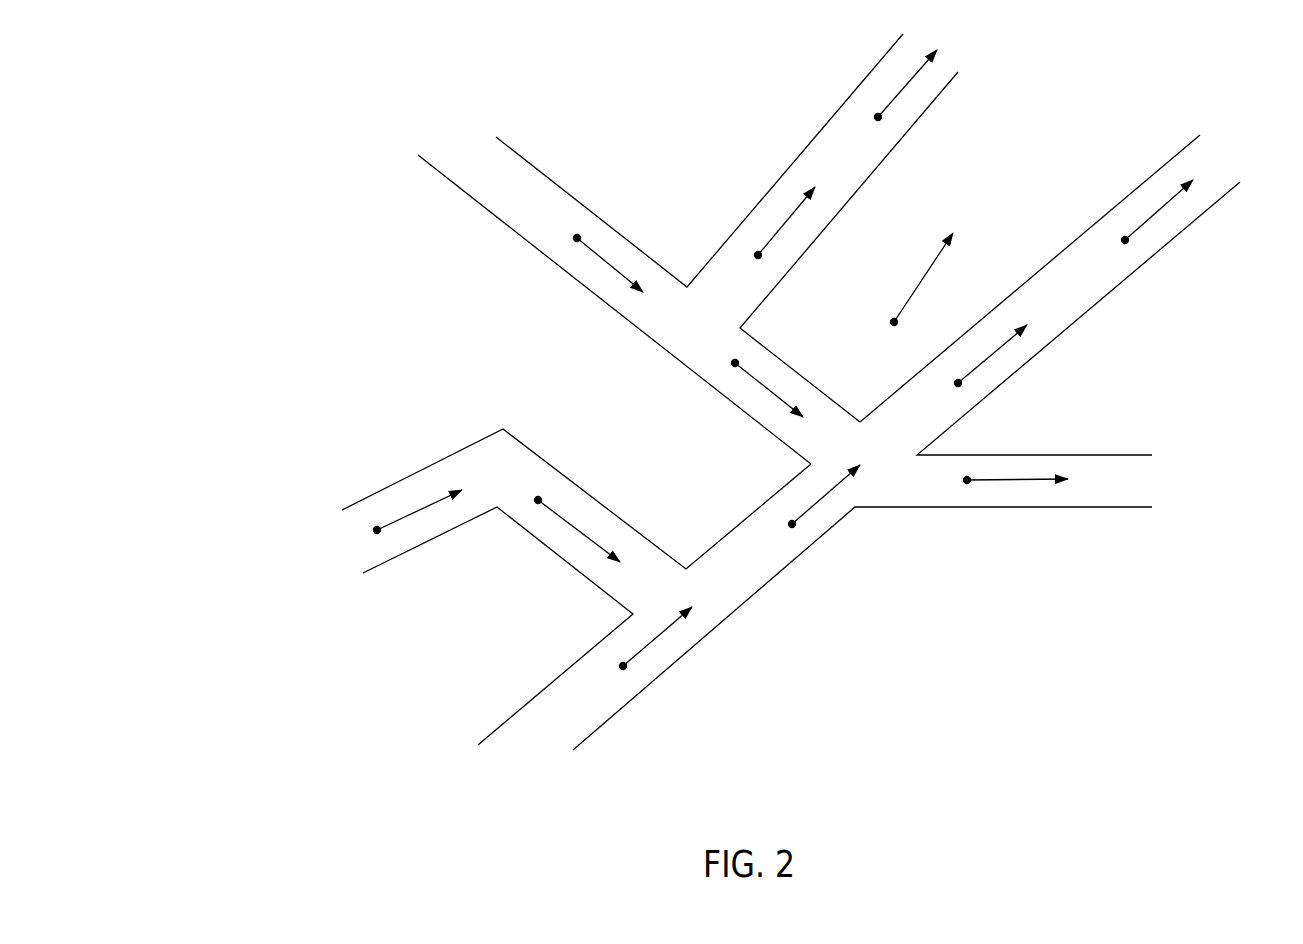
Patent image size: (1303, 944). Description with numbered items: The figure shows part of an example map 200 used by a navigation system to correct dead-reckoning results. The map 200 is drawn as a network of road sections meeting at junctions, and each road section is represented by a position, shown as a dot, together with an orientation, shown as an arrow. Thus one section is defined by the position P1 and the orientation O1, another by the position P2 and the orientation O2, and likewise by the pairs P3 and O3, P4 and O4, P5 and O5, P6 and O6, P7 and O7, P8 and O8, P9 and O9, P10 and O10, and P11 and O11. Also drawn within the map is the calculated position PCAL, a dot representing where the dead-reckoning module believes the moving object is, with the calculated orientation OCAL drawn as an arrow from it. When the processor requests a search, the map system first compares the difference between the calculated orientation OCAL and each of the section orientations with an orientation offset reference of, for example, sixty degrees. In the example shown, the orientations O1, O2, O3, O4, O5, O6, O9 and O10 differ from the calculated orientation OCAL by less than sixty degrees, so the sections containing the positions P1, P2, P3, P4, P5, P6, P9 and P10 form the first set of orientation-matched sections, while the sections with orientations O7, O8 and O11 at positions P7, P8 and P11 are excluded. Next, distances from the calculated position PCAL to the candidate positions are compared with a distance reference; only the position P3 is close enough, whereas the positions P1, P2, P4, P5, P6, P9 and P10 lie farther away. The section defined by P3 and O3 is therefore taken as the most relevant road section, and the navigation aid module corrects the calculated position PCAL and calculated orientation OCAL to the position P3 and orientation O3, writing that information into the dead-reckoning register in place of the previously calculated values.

The map 200 is at (316, 195).
The position P1 is at (611, 668).
The orientation O1 is at (674, 630).
The position P2 is at (781, 527).
The orientation O2 is at (841, 490).
The position P3 is at (946, 382).
The orientation O3 is at (1008, 347).
The position P4 is at (1113, 241).
The orientation O4 is at (1175, 205).
The position P5 is at (746, 260).
The orientation O5 is at (803, 214).
The position P6 is at (866, 126).
The orientation O6 is at (923, 77).
The position P7 is at (567, 225).
The orientation O7 is at (618, 281).
The position P8 is at (724, 351).
The orientation O8 is at (775, 406).
The position P9 is at (954, 473).
The orientation O9 is at (1031, 494).
The position P10 is at (368, 543).
The orientation O10 is at (425, 496).
The position P11 is at (525, 488).
The orientation O11 is at (586, 546).
The calculated position PCAL is at (882, 336).
The calculated orientation OCAL is at (949, 274).